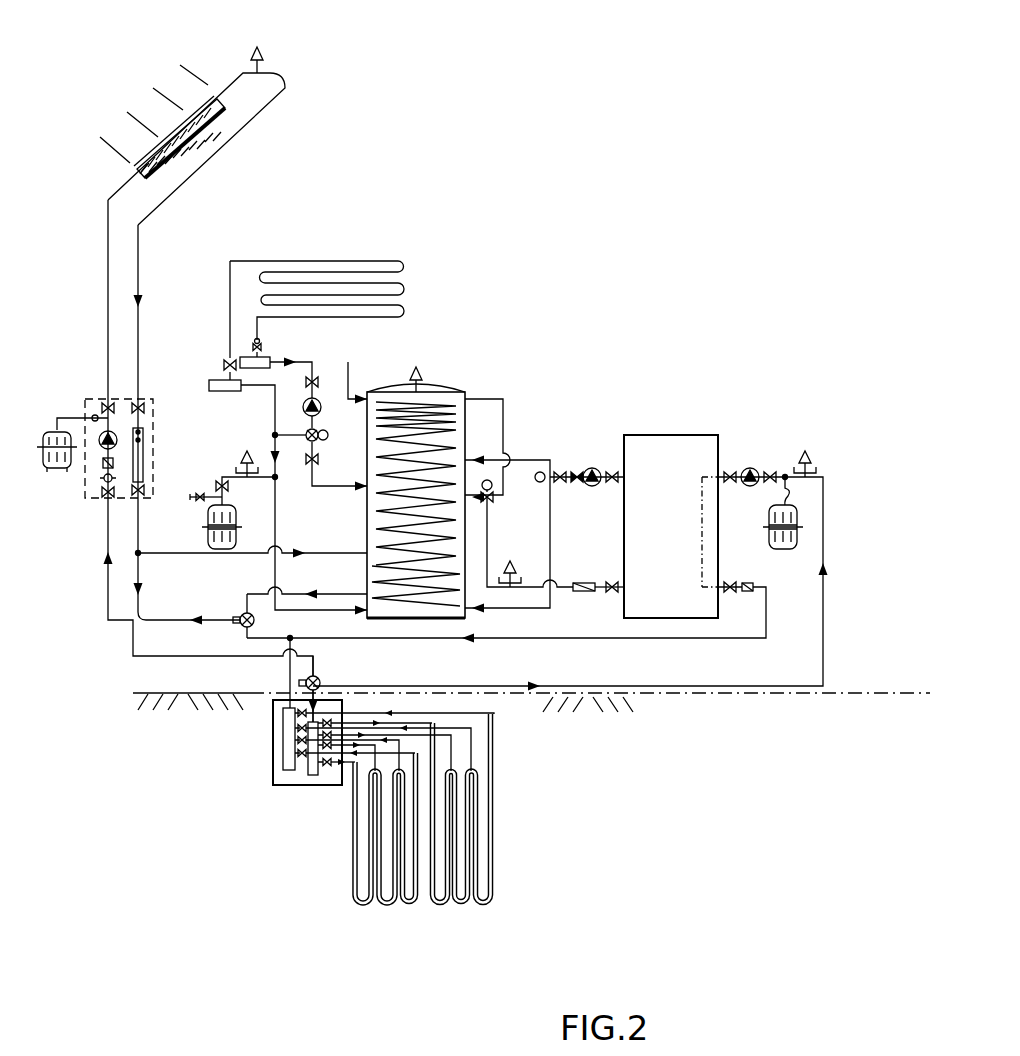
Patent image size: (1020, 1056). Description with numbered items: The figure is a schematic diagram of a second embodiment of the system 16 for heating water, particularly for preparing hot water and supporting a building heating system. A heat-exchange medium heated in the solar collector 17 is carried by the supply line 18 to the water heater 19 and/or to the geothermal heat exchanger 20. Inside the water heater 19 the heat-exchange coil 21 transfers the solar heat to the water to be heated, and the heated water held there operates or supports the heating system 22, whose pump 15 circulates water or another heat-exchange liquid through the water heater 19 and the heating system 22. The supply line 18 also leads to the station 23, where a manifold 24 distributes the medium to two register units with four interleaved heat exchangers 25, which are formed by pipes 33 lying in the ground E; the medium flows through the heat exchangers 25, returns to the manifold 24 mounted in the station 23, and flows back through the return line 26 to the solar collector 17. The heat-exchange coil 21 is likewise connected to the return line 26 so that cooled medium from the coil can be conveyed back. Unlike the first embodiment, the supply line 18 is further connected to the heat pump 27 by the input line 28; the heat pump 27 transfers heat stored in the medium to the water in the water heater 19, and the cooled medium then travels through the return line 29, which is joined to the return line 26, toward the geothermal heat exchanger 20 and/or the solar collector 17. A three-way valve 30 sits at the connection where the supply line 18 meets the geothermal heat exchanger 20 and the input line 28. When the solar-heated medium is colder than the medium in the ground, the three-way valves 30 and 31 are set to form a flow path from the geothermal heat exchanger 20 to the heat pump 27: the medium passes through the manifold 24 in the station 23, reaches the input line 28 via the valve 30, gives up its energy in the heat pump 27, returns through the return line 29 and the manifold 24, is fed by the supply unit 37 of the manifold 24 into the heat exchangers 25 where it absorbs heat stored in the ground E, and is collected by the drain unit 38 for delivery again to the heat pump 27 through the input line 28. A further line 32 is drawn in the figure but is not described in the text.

The pump 15 is at (318, 400).
The system 16 is at (497, 183).
The solar collector 17 is at (187, 96).
The supply line 18 is at (140, 273).
The water heater 19 is at (450, 374).
The geothermal heat exchanger 20 is at (471, 853).
The heat-exchange coil 21 is at (423, 565).
The heating system 22 is at (371, 240).
The station 23 is at (252, 765).
The manifold 24 is at (291, 786).
The heat exchangers 25 is at (442, 920).
The return line 26 is at (105, 598).
The heat pump 27 is at (667, 435).
The input line 28 is at (782, 688).
The return line 29 is at (795, 607).
The three-way valve 30 is at (320, 680).
The three-way valve 31 is at (240, 615).
The supply pipe to storage tank 32 is at (346, 592).
The pipes 33 is at (492, 882).
The supply unit 37 is at (313, 780).
The drain unit 38 is at (283, 757).
The ground E is at (163, 700).